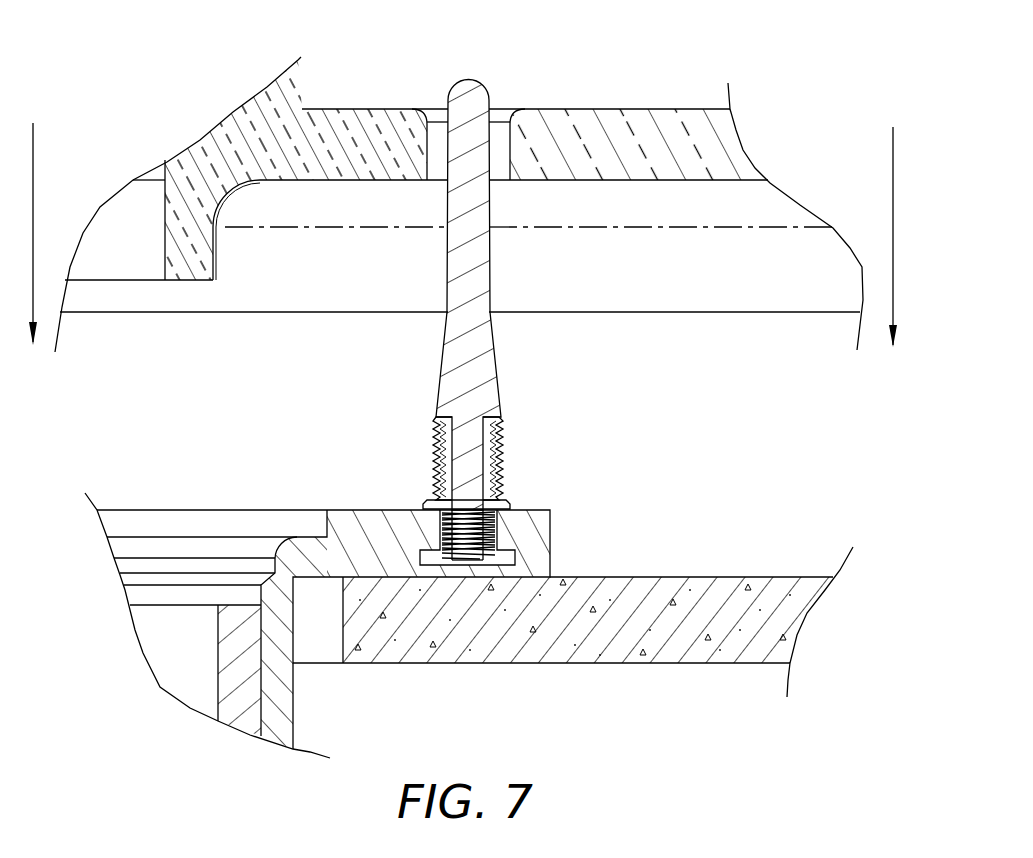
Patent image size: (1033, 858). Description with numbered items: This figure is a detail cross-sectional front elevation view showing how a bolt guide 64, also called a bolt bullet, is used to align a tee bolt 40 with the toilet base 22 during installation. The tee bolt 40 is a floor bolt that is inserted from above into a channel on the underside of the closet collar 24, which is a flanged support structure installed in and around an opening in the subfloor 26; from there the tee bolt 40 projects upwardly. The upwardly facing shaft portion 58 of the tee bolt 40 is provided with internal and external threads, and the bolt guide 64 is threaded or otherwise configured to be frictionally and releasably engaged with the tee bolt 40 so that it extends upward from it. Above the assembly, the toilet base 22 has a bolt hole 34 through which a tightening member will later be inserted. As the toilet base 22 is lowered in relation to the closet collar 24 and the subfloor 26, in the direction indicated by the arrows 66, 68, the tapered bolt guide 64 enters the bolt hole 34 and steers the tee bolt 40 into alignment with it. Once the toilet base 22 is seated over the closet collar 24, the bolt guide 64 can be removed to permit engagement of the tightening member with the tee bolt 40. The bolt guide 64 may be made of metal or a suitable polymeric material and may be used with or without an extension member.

The toilet base 22 is at (636, 113).
The bolt hole 34 is at (430, 140).
The bolt guide 64 is at (447, 323).
The tee bolt 40 is at (420, 430).
The shaft portion 58 is at (498, 433).
The closet collar 24 is at (548, 548).
The subfloor 26 is at (568, 658).
The arrow 66 is at (33, 185).
The arrow 68 is at (893, 170).